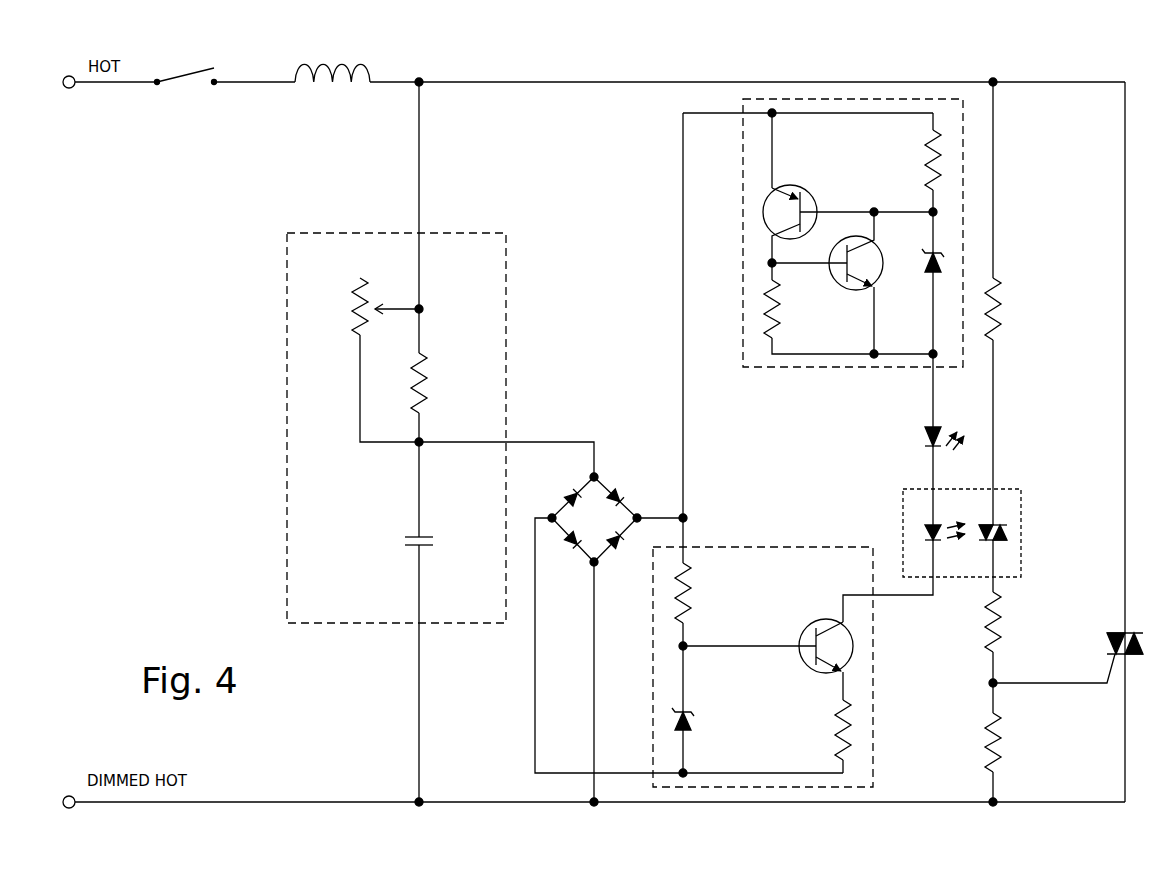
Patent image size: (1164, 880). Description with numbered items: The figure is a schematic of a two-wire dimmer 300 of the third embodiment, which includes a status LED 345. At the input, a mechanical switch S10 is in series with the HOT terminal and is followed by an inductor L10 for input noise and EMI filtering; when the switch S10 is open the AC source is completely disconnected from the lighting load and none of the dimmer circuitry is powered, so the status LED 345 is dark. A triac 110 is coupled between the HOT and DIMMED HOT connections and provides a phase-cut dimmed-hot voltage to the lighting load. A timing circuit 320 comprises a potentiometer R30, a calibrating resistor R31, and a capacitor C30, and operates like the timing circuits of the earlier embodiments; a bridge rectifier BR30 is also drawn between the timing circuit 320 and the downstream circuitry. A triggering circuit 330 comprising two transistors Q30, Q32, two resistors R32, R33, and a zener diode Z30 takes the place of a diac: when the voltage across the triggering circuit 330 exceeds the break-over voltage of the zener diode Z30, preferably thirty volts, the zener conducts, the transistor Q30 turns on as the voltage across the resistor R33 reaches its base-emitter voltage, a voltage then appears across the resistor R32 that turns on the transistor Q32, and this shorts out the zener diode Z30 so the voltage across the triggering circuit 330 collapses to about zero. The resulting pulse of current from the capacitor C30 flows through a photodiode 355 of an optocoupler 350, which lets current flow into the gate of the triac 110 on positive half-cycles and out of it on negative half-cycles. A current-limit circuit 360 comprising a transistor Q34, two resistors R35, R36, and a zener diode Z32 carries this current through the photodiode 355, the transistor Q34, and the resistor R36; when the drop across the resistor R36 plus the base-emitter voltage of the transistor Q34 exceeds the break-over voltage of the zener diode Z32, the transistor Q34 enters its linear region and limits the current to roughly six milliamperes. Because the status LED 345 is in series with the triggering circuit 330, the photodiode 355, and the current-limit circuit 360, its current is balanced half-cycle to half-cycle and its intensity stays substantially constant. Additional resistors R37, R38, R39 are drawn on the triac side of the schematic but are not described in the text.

The two-wire dimmer 300 is at (705, 50).
The timing circuit 320 is at (287, 326).
The triggering circuit 330 is at (818, 368).
The status LED 345 is at (925, 437).
The optocoupler 350 is at (1021, 548).
The photodiode 355 is at (925, 528).
The current-limit circuit 360 is at (800, 548).
The triac 110 is at (1118, 633).
The mechanical switch S10 is at (186, 63).
The inductor L10 is at (332, 57).
The potentiometer R30 is at (363, 306).
The calibrating resistor R31 is at (441, 383).
The capacitor C30 is at (389, 543).
The bridge rectifier BR30 is at (594, 519).
The transistor Q30 is at (790, 209).
The transistor Q32 is at (827, 283).
The resistor R32 is at (792, 303).
The resistor R33 is at (912, 151).
The zener diode Z30 is at (919, 274).
The resistor R35 is at (705, 593).
The transistor Q34 is at (768, 649).
The zener diode Z32 is at (703, 720).
The resistor R36 is at (822, 730).
The resistor R37 is at (1017, 309).
The resistor R38 is at (1013, 622).
The resistor R39 is at (1013, 742).